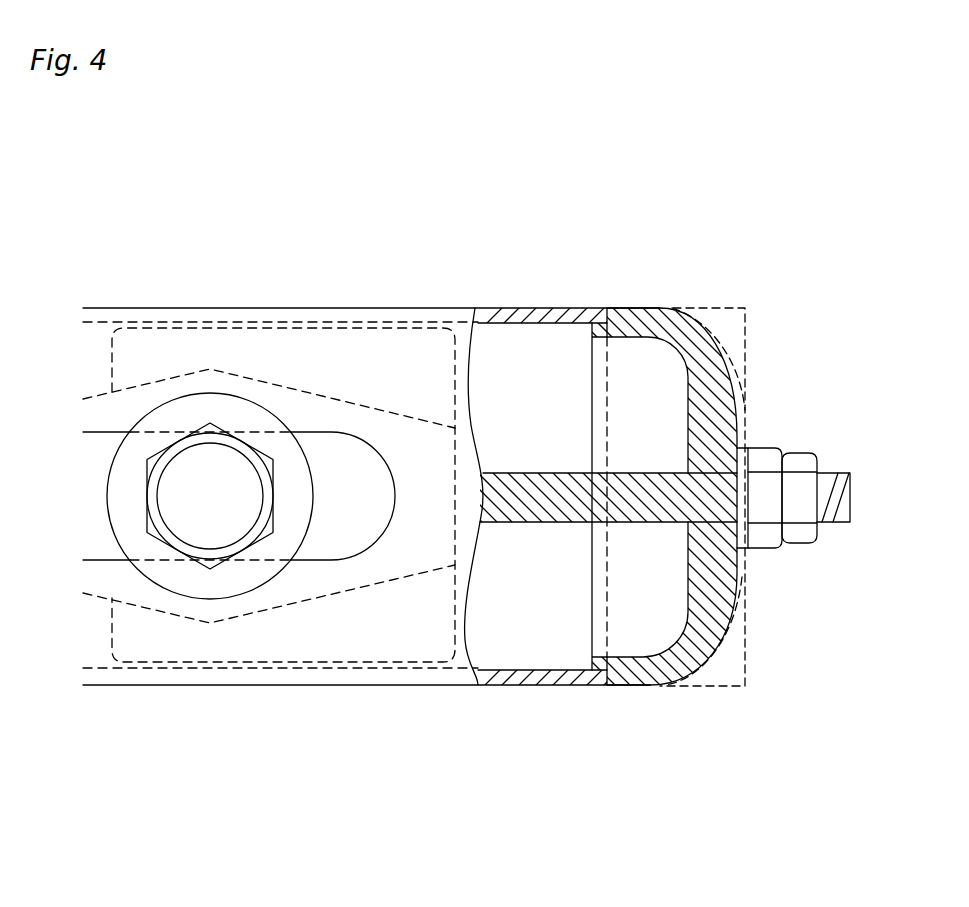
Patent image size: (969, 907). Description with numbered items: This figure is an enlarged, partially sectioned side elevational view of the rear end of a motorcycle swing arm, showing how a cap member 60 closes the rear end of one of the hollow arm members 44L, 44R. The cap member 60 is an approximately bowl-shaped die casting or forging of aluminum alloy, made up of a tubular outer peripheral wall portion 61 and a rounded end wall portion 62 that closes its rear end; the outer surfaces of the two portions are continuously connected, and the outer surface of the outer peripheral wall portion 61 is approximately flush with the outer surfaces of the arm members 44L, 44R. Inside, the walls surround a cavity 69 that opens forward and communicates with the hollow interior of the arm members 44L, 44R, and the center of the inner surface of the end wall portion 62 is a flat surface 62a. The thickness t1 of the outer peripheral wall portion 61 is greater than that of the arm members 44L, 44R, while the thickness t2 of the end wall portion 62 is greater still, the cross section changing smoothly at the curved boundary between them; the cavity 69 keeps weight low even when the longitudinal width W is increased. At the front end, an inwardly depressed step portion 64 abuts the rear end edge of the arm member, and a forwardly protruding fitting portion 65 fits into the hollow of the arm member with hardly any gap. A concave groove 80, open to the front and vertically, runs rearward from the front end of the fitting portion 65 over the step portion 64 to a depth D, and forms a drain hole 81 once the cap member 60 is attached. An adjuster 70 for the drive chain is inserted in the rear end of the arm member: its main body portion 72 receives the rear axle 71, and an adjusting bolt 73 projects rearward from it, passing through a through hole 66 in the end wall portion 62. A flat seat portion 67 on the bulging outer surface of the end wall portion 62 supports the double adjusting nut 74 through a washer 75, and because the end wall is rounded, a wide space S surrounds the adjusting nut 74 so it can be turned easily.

The arm member 44L is at (325, 687).
The arm member 44R is at (280, 495).
The adjuster 70 is at (111, 628).
The rear axle 71 is at (212, 480).
The main body portion 72 is at (271, 387).
The adjusting bolt 73 is at (528, 472).
The cap member 60 is at (584, 447).
The outer peripheral wall portion 61 is at (632, 308).
The end wall portion 62 is at (742, 405).
The flat surface 62a is at (688, 557).
The step portion 64 is at (590, 308).
The fitting portion 65 is at (583, 306).
The through hole 66 is at (692, 482).
The seat portion 67 is at (746, 449).
The cavity 69 is at (648, 594).
The adjusting nut 74 is at (768, 548).
The washer 75 is at (742, 549).
The concave groove 80 is at (598, 338).
The drain hole 81 is at (612, 307).
The space S is at (735, 307).
The depth D is at (621, 760).
The longitudinal width W is at (589, 863).
The thickness t1 is at (570, 698).
The thickness t2 is at (749, 760).